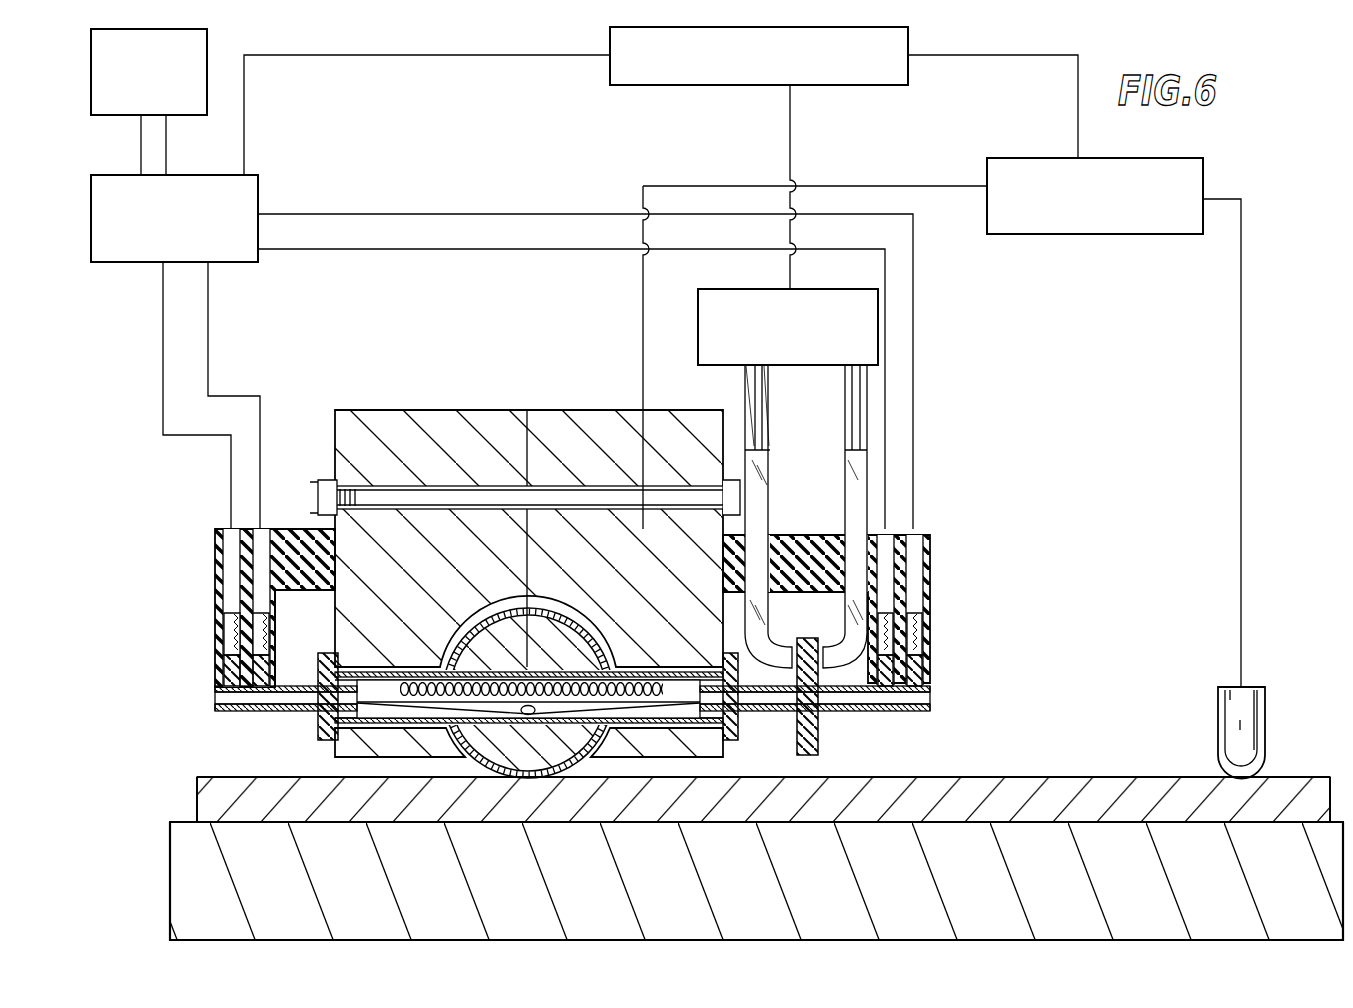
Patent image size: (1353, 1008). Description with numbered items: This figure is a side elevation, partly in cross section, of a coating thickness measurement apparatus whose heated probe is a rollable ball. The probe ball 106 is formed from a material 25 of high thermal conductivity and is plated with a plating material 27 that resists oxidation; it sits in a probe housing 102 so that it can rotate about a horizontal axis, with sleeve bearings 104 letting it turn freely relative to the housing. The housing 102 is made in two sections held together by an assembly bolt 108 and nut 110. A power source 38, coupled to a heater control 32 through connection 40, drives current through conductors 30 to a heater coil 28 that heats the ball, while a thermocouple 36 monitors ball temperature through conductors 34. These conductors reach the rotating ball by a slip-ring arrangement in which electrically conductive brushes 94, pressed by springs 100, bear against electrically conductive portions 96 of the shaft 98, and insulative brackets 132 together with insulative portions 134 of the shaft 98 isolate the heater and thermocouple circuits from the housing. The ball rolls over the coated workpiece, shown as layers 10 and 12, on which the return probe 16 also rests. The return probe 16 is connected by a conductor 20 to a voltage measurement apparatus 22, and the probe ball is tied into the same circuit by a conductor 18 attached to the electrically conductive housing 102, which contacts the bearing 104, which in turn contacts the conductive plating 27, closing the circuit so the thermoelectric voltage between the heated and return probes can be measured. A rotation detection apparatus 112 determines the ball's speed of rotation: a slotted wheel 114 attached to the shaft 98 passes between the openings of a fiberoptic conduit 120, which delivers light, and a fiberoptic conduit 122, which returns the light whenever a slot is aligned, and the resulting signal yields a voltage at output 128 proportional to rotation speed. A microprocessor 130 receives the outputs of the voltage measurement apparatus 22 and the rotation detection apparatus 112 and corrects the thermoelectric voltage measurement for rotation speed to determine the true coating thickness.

The substrate 10 is at (182, 865).
The film layer 12 is at (197, 790).
The return probe 16 is at (1227, 727).
The conductor 18 is at (900, 185).
The conductor 20 is at (1241, 222).
The voltage measurement apparatus 22 is at (1147, 160).
The material 25 is at (570, 735).
The plating material 27 is at (496, 752).
The heater coil 28 is at (632, 680).
The conductors 30 is at (362, 252).
The heater control 32 is at (118, 256).
The conductors 34 is at (382, 213).
The thermocouple 36 is at (528, 705).
The power source 38 is at (207, 36).
The power leads 40 is at (141, 150).
The electrically conductive brushes 94 is at (223, 683).
The electrically conductive portions of shaft 96 is at (215, 686).
The shaft 98 is at (245, 713).
The springs 100 is at (222, 618).
The probe housing 102 is at (346, 611).
The sleeve bearings 104 is at (316, 662).
The probe ball 106 is at (460, 765).
The assembly bolt 108 is at (735, 495).
The nut 110 is at (323, 480).
The rotation detection apparatus 112 is at (787, 367).
The wheel 114 is at (818, 740).
The fiberoptic conduit 120 is at (770, 491).
The fiberoptic conduit 122 is at (851, 505).
The output 128 is at (790, 137).
The microprocessor 130 is at (848, 86).
The insulative brackets 132 is at (220, 564).
The insulative portions of shaft 134 is at (315, 718).